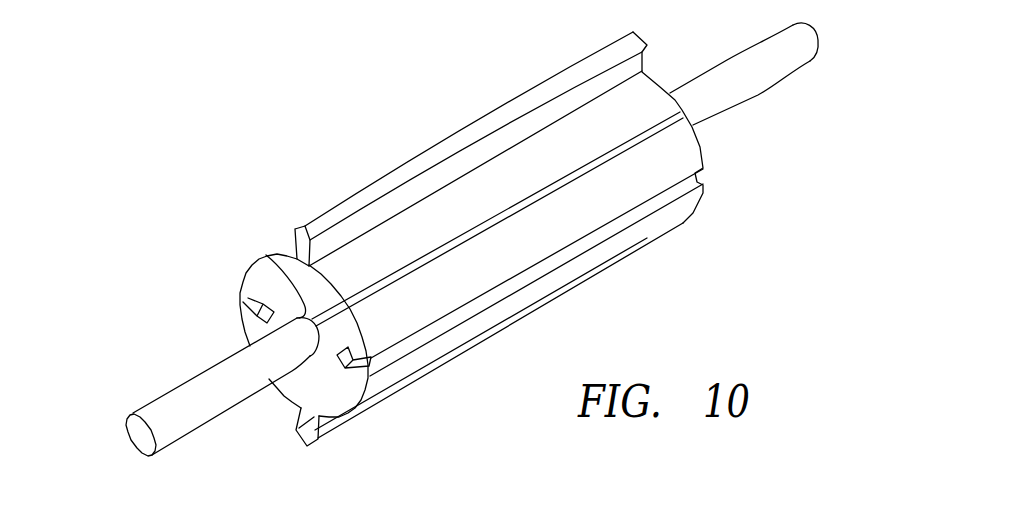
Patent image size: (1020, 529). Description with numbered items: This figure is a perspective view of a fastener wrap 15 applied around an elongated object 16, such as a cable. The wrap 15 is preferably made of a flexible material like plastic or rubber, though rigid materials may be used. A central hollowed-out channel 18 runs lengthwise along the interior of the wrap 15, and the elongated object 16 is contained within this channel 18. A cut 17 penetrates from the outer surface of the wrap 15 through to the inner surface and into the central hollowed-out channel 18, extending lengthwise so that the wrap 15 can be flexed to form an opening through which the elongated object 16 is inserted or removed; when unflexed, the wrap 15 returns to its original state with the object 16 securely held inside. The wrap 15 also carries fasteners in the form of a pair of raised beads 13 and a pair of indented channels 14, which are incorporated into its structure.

The raised beads 13 is at (291, 223).
The indented channels 14 is at (231, 297).
The fastener wrap 15 is at (243, 279).
The elongated object 16 is at (139, 437).
The cut 17 is at (700, 140).
The central hollowed-out channel 18 is at (267, 254).